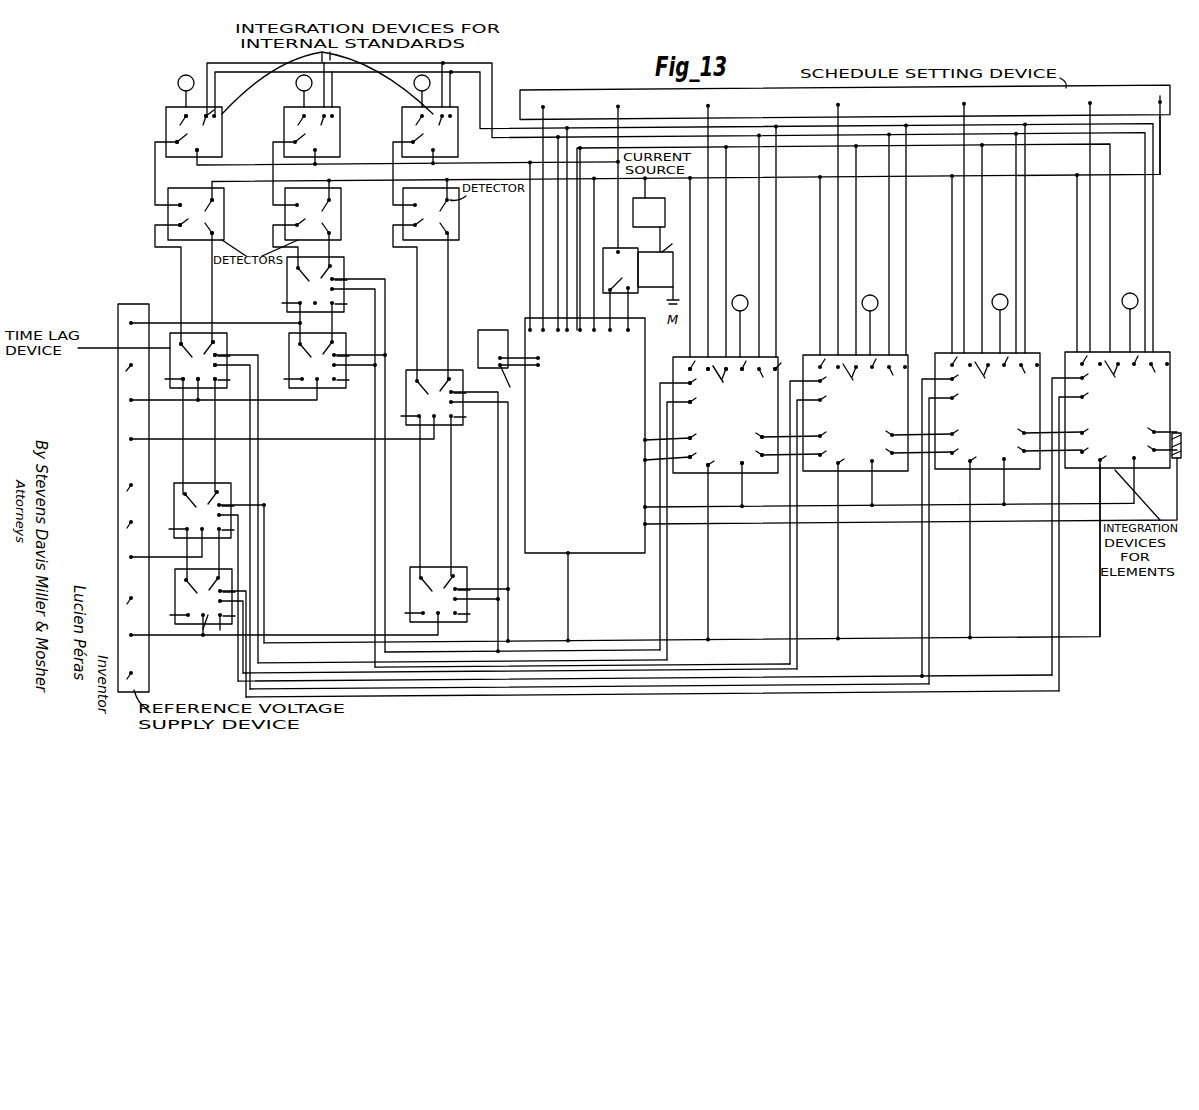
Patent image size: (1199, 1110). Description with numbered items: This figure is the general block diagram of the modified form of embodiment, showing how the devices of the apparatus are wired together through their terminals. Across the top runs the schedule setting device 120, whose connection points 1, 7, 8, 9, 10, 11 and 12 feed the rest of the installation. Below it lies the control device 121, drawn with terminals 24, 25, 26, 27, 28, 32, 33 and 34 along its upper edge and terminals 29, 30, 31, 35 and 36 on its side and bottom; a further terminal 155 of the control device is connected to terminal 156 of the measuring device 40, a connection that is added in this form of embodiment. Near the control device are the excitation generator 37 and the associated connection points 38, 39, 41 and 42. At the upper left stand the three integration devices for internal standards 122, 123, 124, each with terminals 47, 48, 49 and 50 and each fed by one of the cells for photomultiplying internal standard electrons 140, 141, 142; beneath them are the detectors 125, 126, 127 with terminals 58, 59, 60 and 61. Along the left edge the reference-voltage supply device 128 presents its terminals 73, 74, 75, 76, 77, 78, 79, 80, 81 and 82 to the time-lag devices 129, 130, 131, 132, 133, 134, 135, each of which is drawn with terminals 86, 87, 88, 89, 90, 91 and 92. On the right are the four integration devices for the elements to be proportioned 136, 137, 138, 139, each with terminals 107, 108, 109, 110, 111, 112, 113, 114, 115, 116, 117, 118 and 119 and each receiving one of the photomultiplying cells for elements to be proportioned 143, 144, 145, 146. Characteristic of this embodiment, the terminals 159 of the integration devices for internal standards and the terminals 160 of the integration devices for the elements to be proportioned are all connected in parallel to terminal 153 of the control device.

The common line of schedule setting device 1 is at (1157, 96).
The schedule contact 7 is at (551, 101).
The schedule contact 8 is at (618, 106).
The schedule contact 9 is at (708, 106).
The schedule contact 10 is at (838, 105).
The schedule contact 11 is at (964, 104).
The schedule contact 12 is at (1090, 103).
The control device terminal 24 is at (587, 248).
The control device terminal 25 is at (532, 256).
The control device terminal 26 is at (605, 262).
The control device terminal 27 is at (630, 318).
The control device terminal 28 is at (538, 364).
The control device output line 29 is at (640, 506).
The control device output line 30 is at (643, 522).
The control device output line 31 is at (638, 458).
The control device terminal 32 is at (547, 227).
The control device terminal 33 is at (562, 242).
The control device terminal 34 is at (573, 238).
The control device output line 35 is at (640, 440).
The control device output line 36 is at (568, 553).
The excitation generator 37 is at (640, 270).
The switch terminal 38 is at (620, 252).
The line 39 is at (513, 382).
The measuring device 40 is at (656, 205).
The switch contact 41 is at (632, 289).
The switch 42 is at (620, 270).
The integration device terminal 47 is at (179, 123).
The integration device terminal 48 is at (209, 124).
The integration device terminal 49 is at (207, 151).
The integration device terminal 50 is at (187, 141).
The detector terminal 58 is at (208, 208).
The detector terminal 59 is at (205, 227).
The detector terminal 60 is at (189, 198).
The detector terminal 61 is at (187, 219).
The time lag device terminal 73 is at (210, 332).
The time lag device terminal 74 is at (129, 374).
The time lag device terminal 75 is at (219, 399).
The time lag device terminal 76 is at (277, 437).
The time lag device terminal 77 is at (129, 494).
The time lag device terminal 78 is at (129, 531).
The time lag device terminal 79 is at (161, 553).
The time lag device terminal 80 is at (129, 607).
The time lag device terminal 81 is at (279, 634).
The time lag device terminal 82 is at (129, 682).
The relay terminal 86 is at (180, 356).
The relay terminal 87 is at (206, 344).
The relay terminal 88 is at (167, 378).
The relay terminal 89 is at (231, 382).
The relay terminal 90 is at (195, 373).
The relay terminal 91 is at (206, 355).
The relay terminal 92 is at (230, 368).
The integration device terminal 107 is at (687, 375).
The integration device terminal 108 is at (710, 377).
The integration device contact 109 is at (730, 382).
The integration device terminal 110 is at (740, 375).
The integration device terminal 111 is at (759, 375).
The integration device terminal 112 is at (754, 431).
The integration device terminal 113 is at (756, 450).
The integration device terminal 114 is at (733, 460).
The integration device terminal 115 is at (697, 467).
The integration device terminal 116 is at (701, 389).
The integration device terminal 117 is at (702, 408).
The integration device terminal 118 is at (702, 432).
The integration device terminal 119 is at (702, 451).
The schedule setting device 120 is at (530, 91).
The control device 121 is at (644, 358).
The integration device for internal standard 122 is at (222, 129).
The integration device for internal standard 123 is at (340, 131).
The integration device for internal standard 124 is at (458, 154).
The detector 125 is at (224, 237).
The detector 126 is at (341, 237).
The detector 127 is at (459, 232).
The reference-voltage supply device 128 is at (118, 306).
The time-lag device 129 is at (227, 339).
The time-lag device 130 is at (222, 483).
The time-lag device 131 is at (224, 570).
The time-lag device 132 is at (342, 269).
The time-lag device 133 is at (344, 388).
The time-lag device 134 is at (453, 430).
The time-lag device 135 is at (460, 575).
The integration device for element to be proportioned 136 is at (783, 347).
The integration device for element to be proportioned 137 is at (904, 349).
The integration device for element to be proportioned 138 is at (1032, 348).
The integration device for element to be proportioned 139 is at (1134, 348).
The cell for photomultiplying internal standard electrons 140 is at (178, 86).
The cell for photomultiplying internal standard electrons 141 is at (296, 86).
The cell for photomultiplying internal standard electrons 142 is at (414, 86).
The photomultiplying cell for element to be proportioned 143 is at (741, 295).
The photomultiplying cell for element to be proportioned 144 is at (870, 316).
The photomultiplying cell for element to be proportioned 145 is at (1000, 315).
The photomultiplying cell for element to be proportioned 146 is at (1130, 314).
The terminal of control device 153 is at (588, 350).
The terminal of control device 155 is at (540, 362).
The terminal of measuring device 156 is at (500, 331).
The terminal of integration device for internal standard 159 is at (216, 110).
The terminal of integration device for element to be proportioned 160 is at (966, 381).